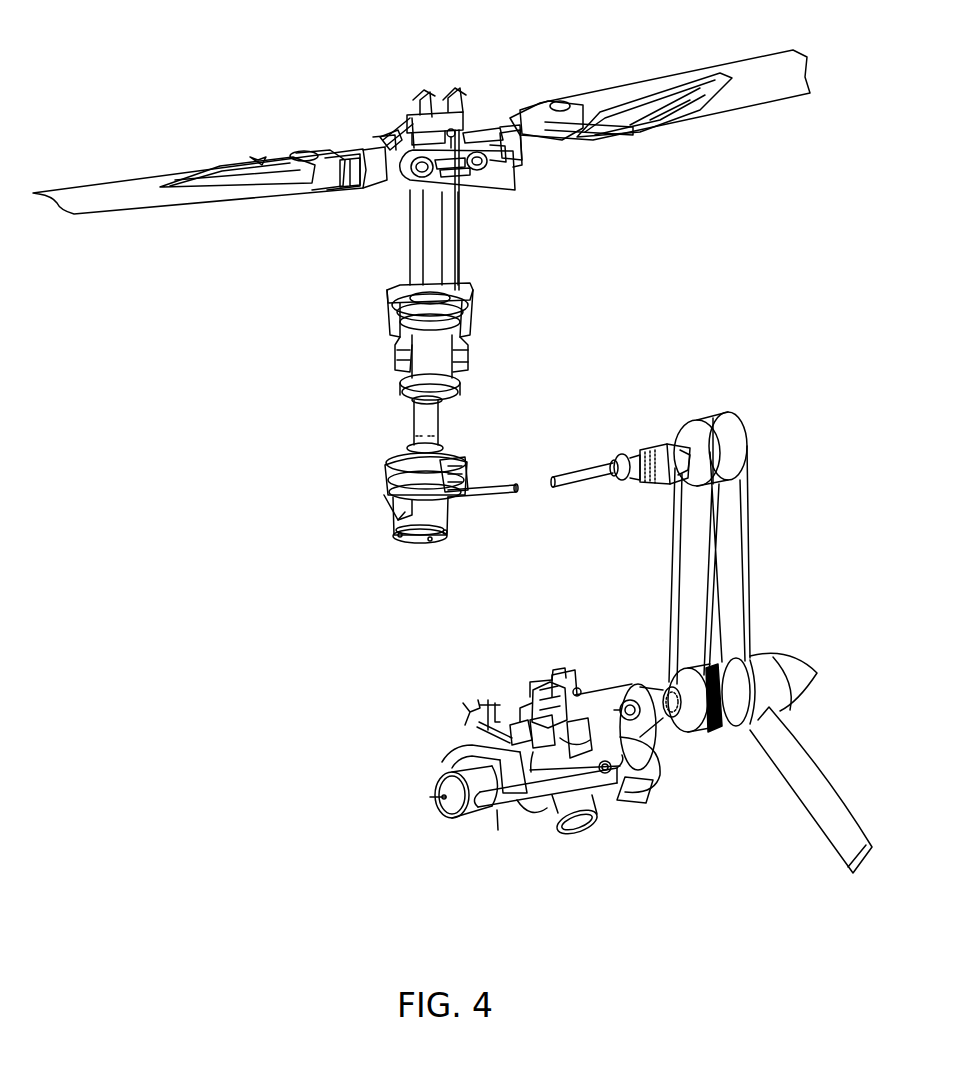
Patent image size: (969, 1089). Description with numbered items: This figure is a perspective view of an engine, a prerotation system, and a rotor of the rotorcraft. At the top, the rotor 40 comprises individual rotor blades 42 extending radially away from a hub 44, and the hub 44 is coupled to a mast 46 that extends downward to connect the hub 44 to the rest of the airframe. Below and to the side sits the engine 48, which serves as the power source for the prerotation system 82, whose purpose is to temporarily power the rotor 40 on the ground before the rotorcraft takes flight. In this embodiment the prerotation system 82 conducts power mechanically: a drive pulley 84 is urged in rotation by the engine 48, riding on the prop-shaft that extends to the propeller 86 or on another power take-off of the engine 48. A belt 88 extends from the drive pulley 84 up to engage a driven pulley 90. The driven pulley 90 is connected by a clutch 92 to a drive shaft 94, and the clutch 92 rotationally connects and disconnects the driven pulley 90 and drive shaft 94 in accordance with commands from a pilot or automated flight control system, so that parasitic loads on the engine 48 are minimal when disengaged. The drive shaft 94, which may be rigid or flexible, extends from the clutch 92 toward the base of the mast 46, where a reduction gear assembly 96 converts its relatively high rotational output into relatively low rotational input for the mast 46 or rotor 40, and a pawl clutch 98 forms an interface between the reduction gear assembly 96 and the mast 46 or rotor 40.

The rotor 40 is at (488, 84).
The rotor blades 42 is at (114, 208).
The hub 44 is at (412, 128).
The mast 46 is at (443, 232).
The engine 48 is at (471, 681).
The prerotation system 82 is at (200, 638).
The drive pulley 84 is at (697, 762).
The propeller 86 is at (822, 730).
The belt 88 is at (684, 619).
The driven pulley 90 is at (712, 394).
The clutch 92 is at (636, 502).
The drive shaft 94 is at (480, 490).
The reduction gear assembly 96 is at (386, 529).
The pawl clutch 98 is at (366, 480).